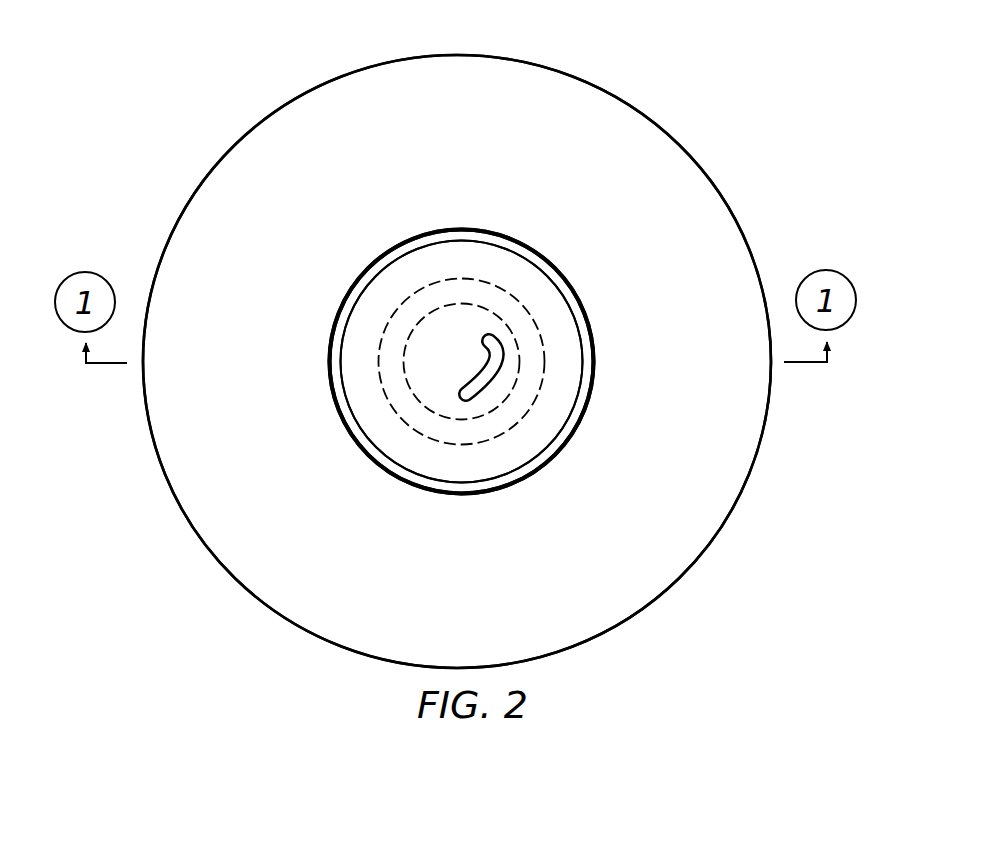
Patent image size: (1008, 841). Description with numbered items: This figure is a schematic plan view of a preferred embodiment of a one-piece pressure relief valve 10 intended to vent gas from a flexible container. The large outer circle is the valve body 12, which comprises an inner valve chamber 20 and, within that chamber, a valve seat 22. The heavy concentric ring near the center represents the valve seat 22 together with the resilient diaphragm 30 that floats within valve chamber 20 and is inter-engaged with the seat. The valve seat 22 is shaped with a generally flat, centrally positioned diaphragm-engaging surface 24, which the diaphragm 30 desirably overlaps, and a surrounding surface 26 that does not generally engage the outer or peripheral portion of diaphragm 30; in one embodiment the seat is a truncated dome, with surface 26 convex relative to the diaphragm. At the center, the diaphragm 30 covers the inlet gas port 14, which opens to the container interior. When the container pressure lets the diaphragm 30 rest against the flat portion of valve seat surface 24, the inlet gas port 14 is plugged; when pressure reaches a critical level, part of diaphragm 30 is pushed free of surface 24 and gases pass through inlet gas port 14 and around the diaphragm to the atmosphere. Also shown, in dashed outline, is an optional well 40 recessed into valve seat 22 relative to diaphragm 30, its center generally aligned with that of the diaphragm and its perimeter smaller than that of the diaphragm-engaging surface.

The pressure relief valve 10 is at (154, 546).
The valve body 12 is at (456, 55).
The inlet gas port 14 is at (490, 390).
The inner valve chamber 20 is at (539, 254).
The valve seat 22 is at (594, 349).
The diaphragm-engaging surface 24 is at (400, 392).
The non-engaging surface 26 is at (400, 439).
The resilient diaphragm 30 is at (375, 273).
The well 40 is at (517, 340).